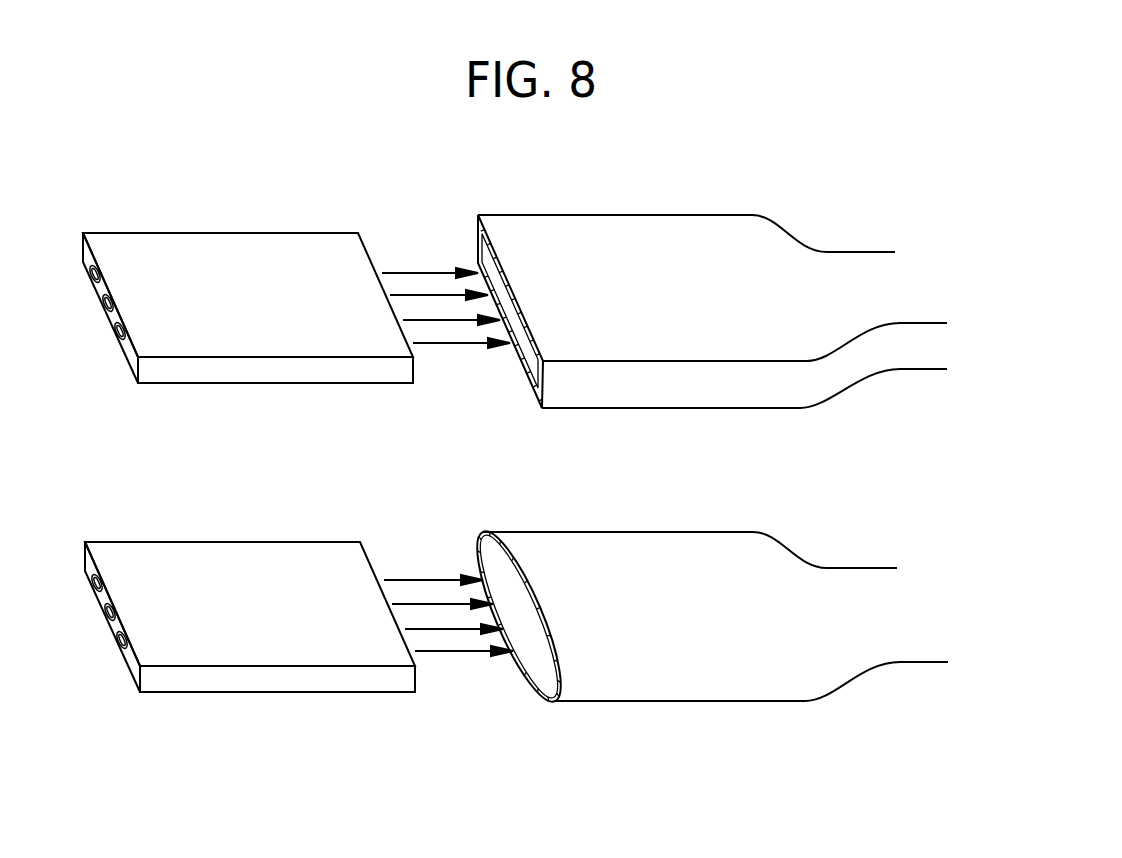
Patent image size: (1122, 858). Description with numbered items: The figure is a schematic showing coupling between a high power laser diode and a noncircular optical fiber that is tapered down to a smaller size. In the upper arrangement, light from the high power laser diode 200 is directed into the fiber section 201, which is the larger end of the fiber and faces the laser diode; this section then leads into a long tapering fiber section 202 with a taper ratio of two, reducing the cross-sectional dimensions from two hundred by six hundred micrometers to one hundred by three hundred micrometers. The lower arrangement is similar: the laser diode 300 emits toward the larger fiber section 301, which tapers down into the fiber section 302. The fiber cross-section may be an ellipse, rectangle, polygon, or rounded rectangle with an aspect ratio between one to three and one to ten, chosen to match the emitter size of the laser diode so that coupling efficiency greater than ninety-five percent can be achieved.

The high power laser diode 200 is at (213, 232).
The fiber section 201 is at (620, 215).
The tapered fiber section 202 is at (838, 252).
The high power laser diode 300 is at (215, 541).
The fiber section 301 is at (618, 532).
The tapered fiber section 302 is at (837, 568).